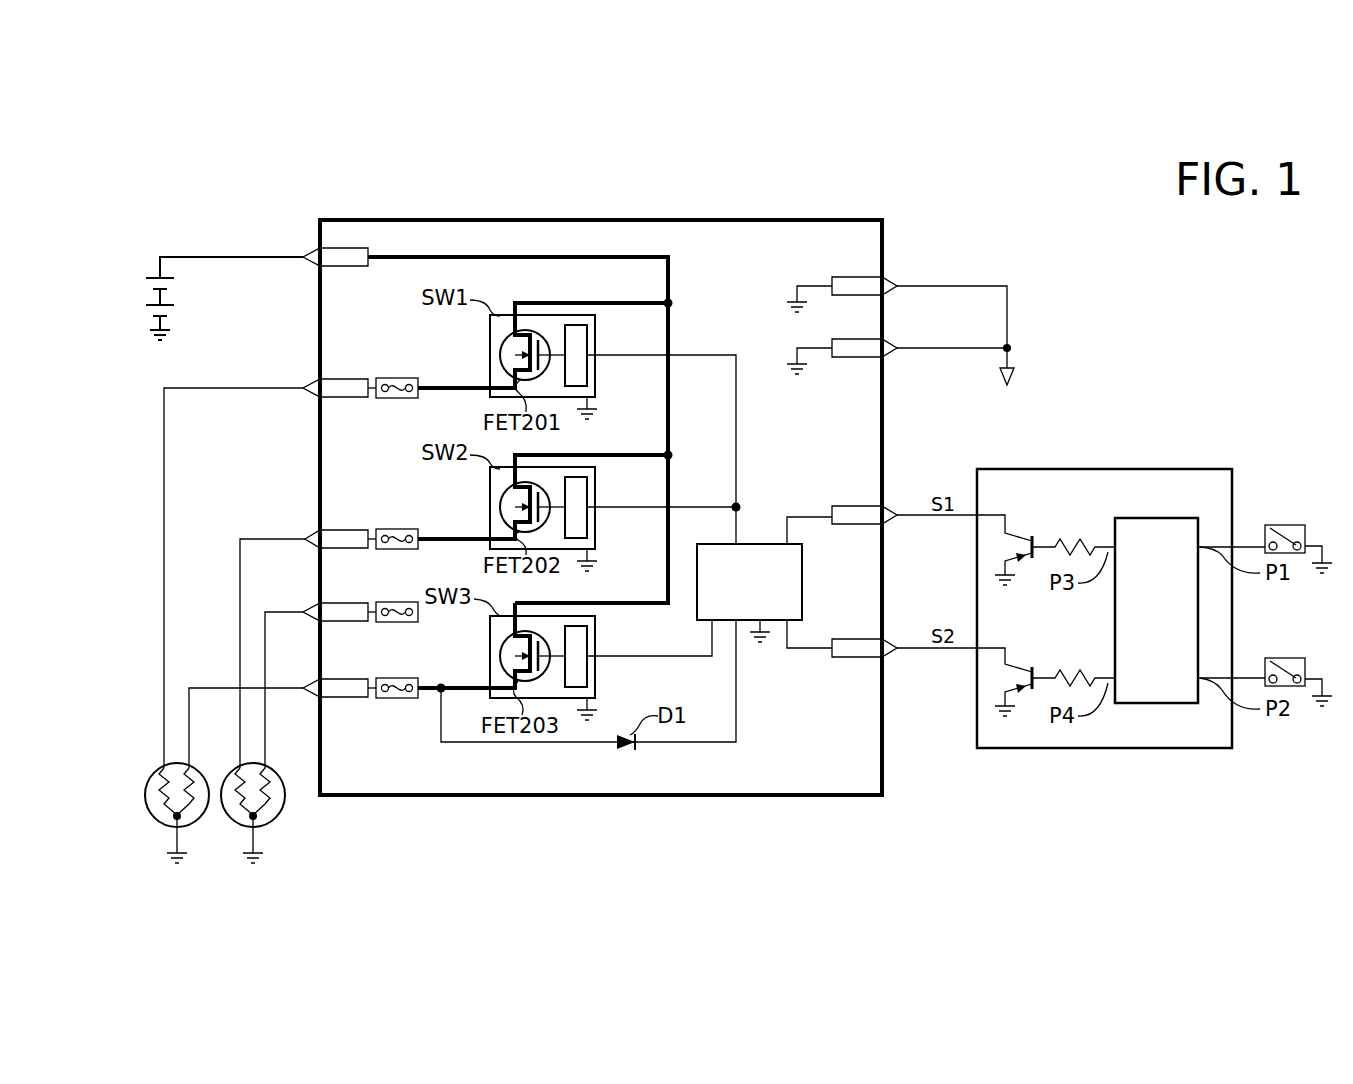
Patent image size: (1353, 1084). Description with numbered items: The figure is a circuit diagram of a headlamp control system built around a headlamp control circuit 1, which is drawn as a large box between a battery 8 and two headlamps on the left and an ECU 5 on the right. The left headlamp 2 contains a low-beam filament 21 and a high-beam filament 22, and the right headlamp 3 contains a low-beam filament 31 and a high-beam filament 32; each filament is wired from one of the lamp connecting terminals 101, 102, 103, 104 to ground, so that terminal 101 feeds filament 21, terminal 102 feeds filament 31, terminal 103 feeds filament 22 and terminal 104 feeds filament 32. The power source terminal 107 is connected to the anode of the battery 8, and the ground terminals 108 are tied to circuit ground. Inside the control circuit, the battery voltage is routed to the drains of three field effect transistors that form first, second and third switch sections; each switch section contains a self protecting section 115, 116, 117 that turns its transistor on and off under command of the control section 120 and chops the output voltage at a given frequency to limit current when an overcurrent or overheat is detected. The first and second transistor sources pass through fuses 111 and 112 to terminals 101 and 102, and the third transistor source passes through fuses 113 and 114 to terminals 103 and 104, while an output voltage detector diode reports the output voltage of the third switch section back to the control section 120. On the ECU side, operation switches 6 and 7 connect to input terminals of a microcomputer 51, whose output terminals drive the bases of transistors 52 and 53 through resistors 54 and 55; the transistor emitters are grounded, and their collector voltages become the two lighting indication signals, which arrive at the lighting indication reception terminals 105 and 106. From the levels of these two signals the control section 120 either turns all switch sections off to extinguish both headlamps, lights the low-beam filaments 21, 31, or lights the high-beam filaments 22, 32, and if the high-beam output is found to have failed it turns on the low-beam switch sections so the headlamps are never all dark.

The headlamp control circuit 1 is at (756, 220).
The left headlamp 2 is at (163, 816).
The right headlamp 3 is at (274, 801).
The ECU 5 is at (1178, 469).
The operation switch 6 is at (1282, 658).
The operation switch 7 is at (1282, 525).
The battery 8 is at (186, 293).
The low-beam filament 21 is at (156, 812).
The high-beam filament 22 is at (205, 826).
The low-beam filament 31 is at (229, 776).
The high-beam filament 32 is at (283, 801).
The microcomputer 51 is at (1160, 518).
The transistor 52 is at (1020, 540).
The transistor 53 is at (1020, 672).
The resistor 54 is at (1075, 540).
The resistor 55 is at (1075, 672).
The first lamp connecting terminal 101 is at (305, 386).
The second lamp connecting terminal 102 is at (306, 536).
The third lamp connecting terminal 103 is at (306, 686).
The fourth lamp connecting terminal 104 is at (305, 610).
The lighting indication reception terminal 105 is at (897, 508).
The lighting indication reception terminal 106 is at (897, 641).
The power source terminal 107 is at (305, 255).
The ground terminals 108 is at (903, 344).
The fuse 111 is at (395, 377).
The fuse 112 is at (395, 528).
The fuse 113 is at (395, 677).
The fuse 114 is at (395, 601).
The self protecting section 115 is at (588, 378).
The self protecting section 116 is at (588, 530).
The self protecting section 117 is at (588, 679).
The control section 120 is at (764, 544).